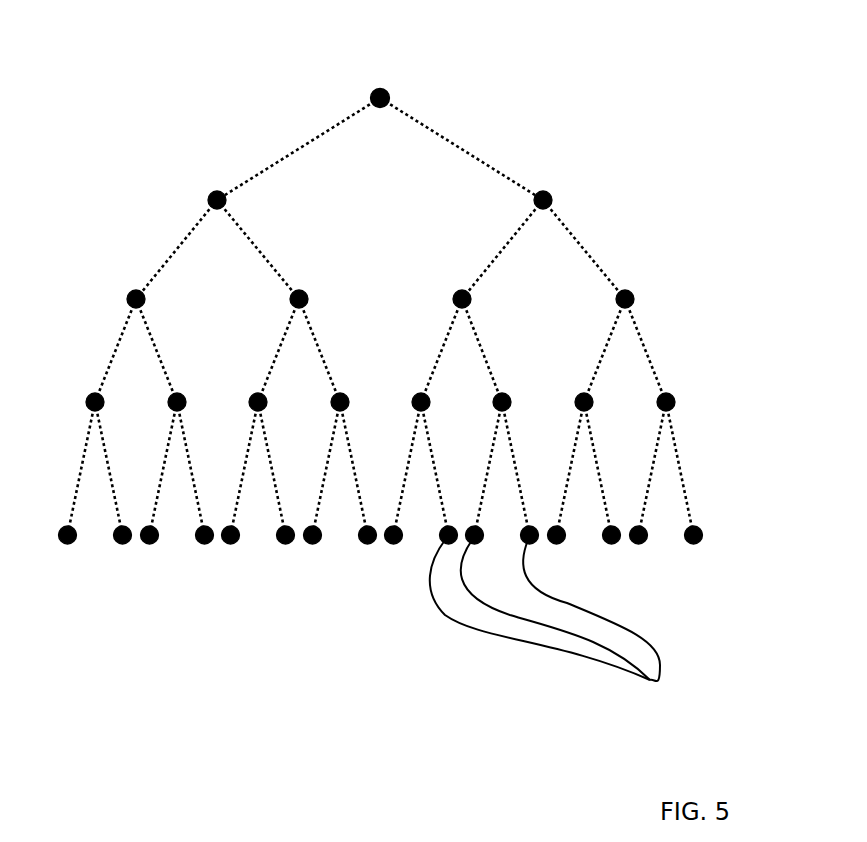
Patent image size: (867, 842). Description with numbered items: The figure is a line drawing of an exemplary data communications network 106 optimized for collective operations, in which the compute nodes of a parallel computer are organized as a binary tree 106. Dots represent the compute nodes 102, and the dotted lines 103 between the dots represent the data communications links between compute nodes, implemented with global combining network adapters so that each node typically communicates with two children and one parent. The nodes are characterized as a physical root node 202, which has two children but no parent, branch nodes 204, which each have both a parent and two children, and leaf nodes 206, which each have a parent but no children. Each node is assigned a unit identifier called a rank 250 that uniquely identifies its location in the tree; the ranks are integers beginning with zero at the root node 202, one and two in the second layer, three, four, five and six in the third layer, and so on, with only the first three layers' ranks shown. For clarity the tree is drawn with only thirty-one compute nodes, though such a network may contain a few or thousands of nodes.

The compute nodes 102 is at (668, 754).
The dotted lines 103 is at (308, 143).
The data communications network 106 is at (187, 625).
The physical root node 202 is at (397, 92).
The branch nodes 204 is at (712, 155).
The leaf nodes 206 is at (712, 558).
The rank 250 is at (512, 208).